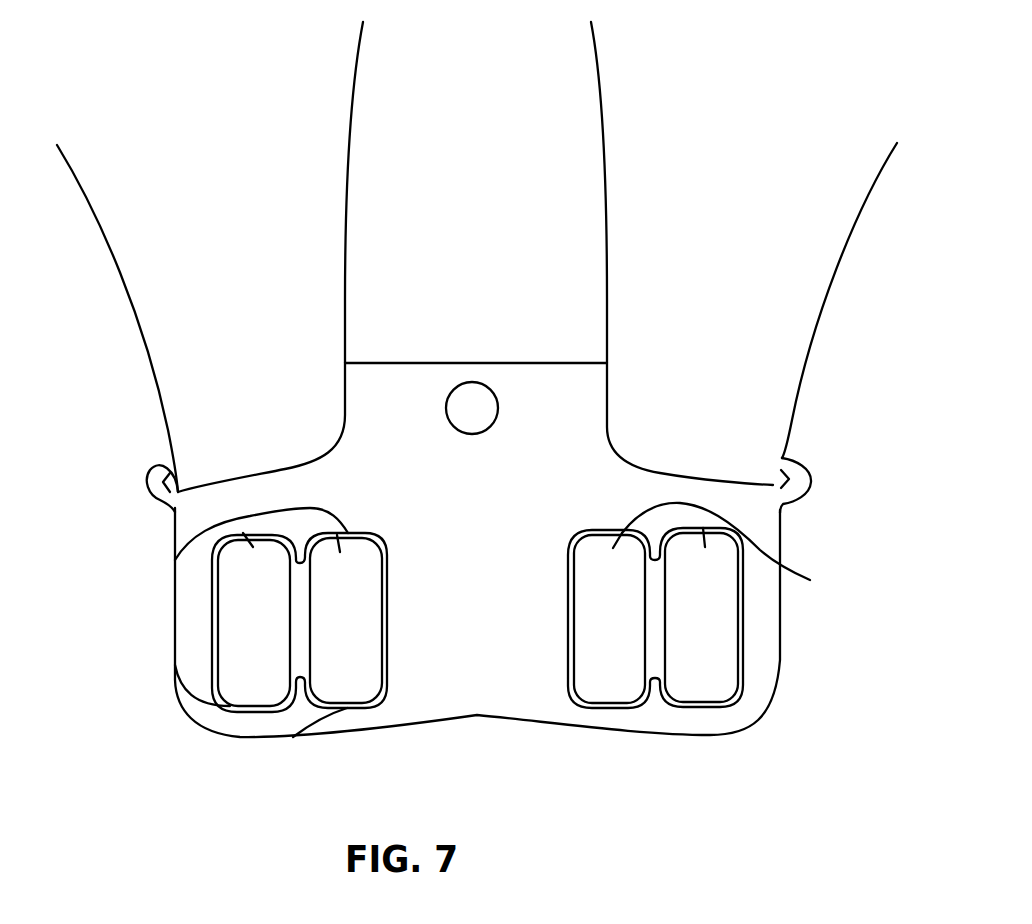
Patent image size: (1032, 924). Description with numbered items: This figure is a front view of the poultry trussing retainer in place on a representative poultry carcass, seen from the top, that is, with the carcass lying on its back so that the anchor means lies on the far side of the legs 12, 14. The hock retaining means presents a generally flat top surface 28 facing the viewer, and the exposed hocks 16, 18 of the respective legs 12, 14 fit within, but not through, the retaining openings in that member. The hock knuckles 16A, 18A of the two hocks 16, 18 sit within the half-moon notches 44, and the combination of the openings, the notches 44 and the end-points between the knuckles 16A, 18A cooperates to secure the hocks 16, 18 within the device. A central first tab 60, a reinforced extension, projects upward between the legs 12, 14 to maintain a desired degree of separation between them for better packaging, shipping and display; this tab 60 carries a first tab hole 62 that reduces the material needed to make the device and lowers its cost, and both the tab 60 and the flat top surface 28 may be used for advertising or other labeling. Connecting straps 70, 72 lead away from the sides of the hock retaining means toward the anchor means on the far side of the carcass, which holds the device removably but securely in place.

The leg 12 is at (181, 127).
The leg 14 is at (698, 156).
The hock 16 is at (265, 648).
The hock knuckle 16A is at (175, 560).
The hock 18 is at (690, 647).
The hock knuckle 18A is at (606, 768).
The flat top surface 28 is at (488, 610).
The half-moon notches 44 is at (283, 532).
The first tab 60 is at (462, 362).
The first tab hole 62 is at (488, 407).
The strap 70 is at (153, 487).
The strap 72 is at (800, 473).